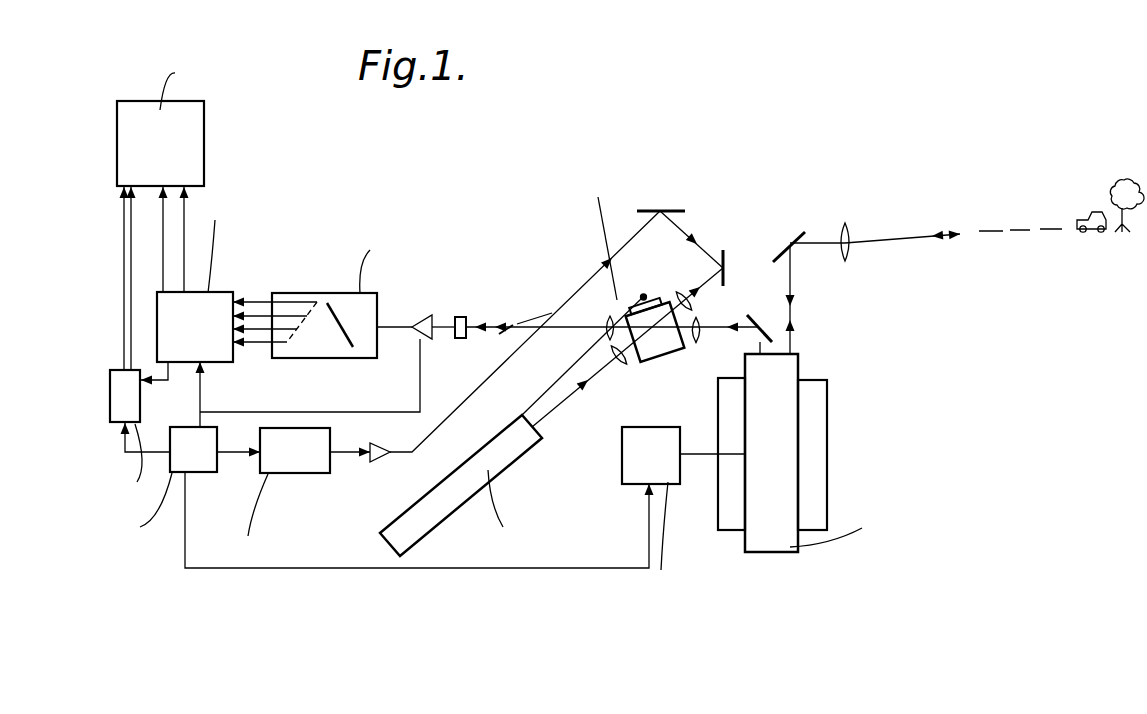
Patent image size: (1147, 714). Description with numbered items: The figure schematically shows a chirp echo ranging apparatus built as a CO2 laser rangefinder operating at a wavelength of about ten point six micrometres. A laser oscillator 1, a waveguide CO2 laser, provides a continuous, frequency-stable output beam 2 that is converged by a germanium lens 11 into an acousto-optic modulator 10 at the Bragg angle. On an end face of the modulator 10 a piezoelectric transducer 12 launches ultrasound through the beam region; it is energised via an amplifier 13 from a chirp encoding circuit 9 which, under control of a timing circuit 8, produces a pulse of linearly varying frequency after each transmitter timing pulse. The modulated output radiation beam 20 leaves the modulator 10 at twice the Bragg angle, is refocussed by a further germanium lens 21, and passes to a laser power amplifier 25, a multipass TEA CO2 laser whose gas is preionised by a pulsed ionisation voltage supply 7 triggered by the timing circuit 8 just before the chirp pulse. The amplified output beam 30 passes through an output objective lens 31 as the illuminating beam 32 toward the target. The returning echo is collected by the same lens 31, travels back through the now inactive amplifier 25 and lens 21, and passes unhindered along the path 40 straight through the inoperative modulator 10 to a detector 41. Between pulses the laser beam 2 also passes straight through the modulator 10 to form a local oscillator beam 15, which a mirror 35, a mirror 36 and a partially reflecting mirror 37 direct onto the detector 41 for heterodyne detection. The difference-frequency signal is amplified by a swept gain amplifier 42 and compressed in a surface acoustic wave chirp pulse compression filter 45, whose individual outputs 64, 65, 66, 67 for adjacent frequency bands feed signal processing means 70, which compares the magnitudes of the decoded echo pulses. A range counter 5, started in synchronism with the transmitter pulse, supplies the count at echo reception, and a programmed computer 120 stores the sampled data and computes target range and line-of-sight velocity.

The laser oscillator 1 is at (463, 488).
The output beam 2 is at (566, 400).
The range counter 5 is at (133, 407).
The pulsed ionisation voltage supply 7 is at (624, 470).
The timing circuit 8 is at (205, 462).
The chirp encoding circuit 9 is at (318, 466).
The acousto-optic modulator 10 is at (650, 360).
The germanium lens 11 is at (624, 367).
The piezoelectric transducer 12 is at (648, 297).
The amplifier 13 is at (376, 464).
The local oscillator beam 15 is at (692, 300).
The modulated output radiation beam 20 is at (697, 343).
The further germanium lens 21 is at (703, 322).
The laser power amplifier 25 is at (787, 430).
The output beam 30 is at (795, 337).
The output objective lens 31 is at (852, 238).
The illuminating beam 32 is at (1017, 229).
The mirror 35 is at (728, 256).
The mirror 36 is at (653, 210).
The partially reflecting mirror 37 is at (506, 333).
The path of received echo beam 40 is at (585, 332).
The detector 41 is at (469, 316).
The swept gain amplifier 42 is at (326, 363).
The surface acoustic wave chirp pulse compression filter 45 is at (367, 358).
The individual output 64 is at (251, 342).
The individual output 65 is at (262, 329).
The individual output 66 is at (266, 316).
The individual output 67 is at (256, 302).
The signal processing means 70 is at (160, 292).
The computer 120 is at (197, 125).